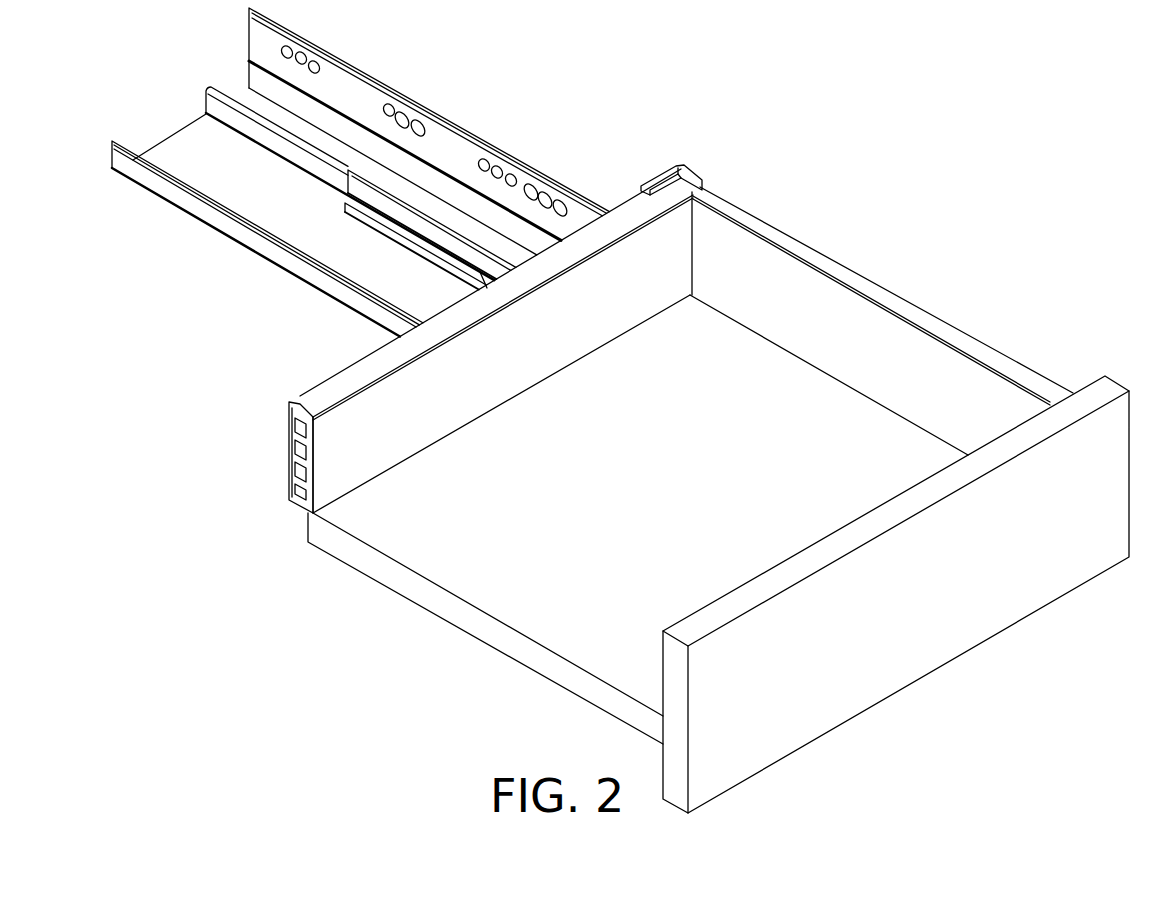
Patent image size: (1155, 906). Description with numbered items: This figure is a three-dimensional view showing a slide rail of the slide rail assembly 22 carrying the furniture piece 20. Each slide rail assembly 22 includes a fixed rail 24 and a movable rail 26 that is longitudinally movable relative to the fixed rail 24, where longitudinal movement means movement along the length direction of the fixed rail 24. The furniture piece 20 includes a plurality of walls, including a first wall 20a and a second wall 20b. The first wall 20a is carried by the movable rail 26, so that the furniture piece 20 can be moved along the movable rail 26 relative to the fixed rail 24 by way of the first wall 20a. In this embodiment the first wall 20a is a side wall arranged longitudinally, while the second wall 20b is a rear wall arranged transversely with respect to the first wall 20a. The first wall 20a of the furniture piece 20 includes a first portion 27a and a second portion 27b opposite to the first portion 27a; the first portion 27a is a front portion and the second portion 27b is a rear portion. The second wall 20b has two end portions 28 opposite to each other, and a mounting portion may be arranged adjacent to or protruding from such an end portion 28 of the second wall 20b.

The furniture piece 20 is at (958, 698).
The first wall 20a is at (942, 300).
The second wall 20b is at (392, 345).
The slide rail assembly 22 is at (498, 119).
The fixed rail 24 is at (214, 90).
The movable rail 26 is at (490, 235).
The first portion 27a is at (1038, 383).
The second portion 27b is at (704, 184).
The end portion 28 is at (293, 403).